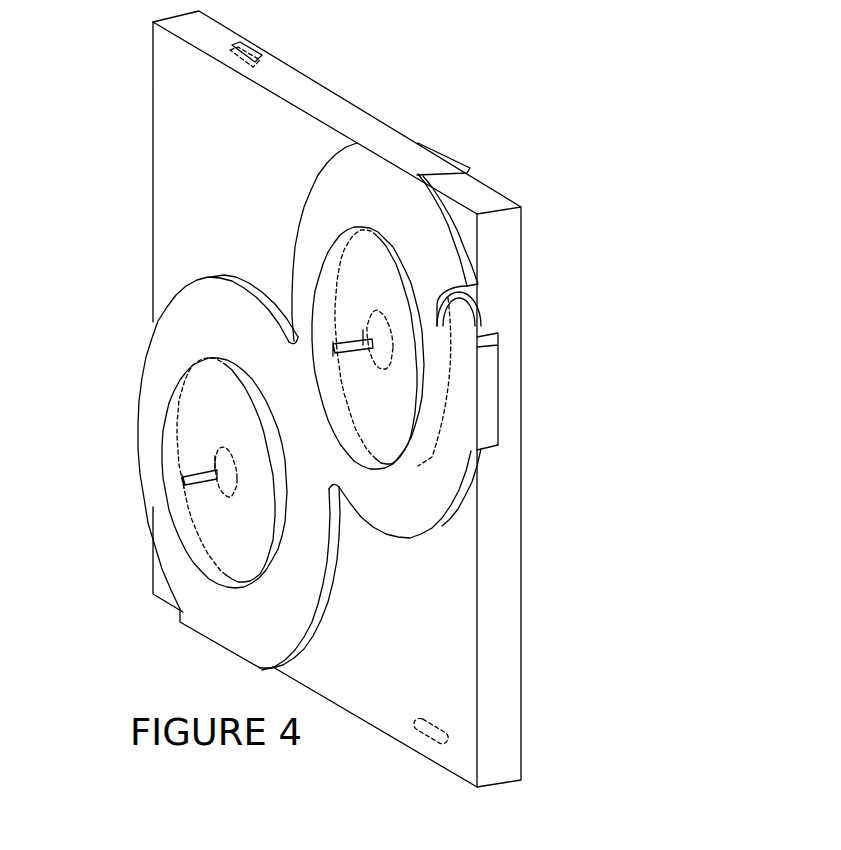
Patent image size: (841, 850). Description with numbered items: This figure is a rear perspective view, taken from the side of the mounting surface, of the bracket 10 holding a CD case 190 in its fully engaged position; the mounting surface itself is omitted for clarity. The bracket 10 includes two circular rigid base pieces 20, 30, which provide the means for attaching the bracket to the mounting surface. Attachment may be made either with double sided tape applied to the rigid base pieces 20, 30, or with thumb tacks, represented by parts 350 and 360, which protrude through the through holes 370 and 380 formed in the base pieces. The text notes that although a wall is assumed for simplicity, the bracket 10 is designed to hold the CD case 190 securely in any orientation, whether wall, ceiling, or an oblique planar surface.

The CD case 190 is at (150, 22).
The bracket 10 is at (243, 322).
The circular rigid base piece 20 is at (373, 272).
The circular rigid base piece 30 is at (215, 413).
The thumb tack 350 is at (361, 353).
The through hole 370 is at (383, 355).
The thumb tack 360 is at (185, 480).
The through hole 380 is at (213, 463).